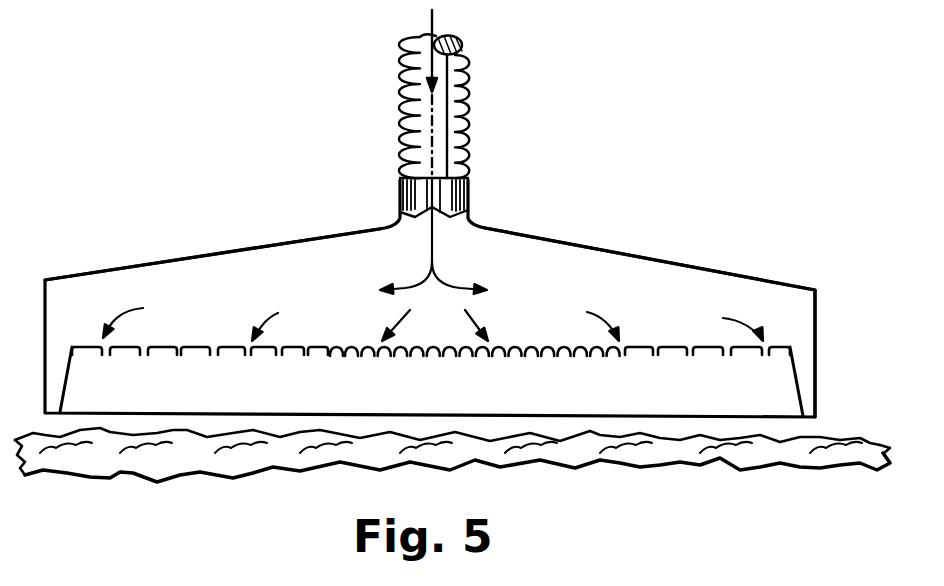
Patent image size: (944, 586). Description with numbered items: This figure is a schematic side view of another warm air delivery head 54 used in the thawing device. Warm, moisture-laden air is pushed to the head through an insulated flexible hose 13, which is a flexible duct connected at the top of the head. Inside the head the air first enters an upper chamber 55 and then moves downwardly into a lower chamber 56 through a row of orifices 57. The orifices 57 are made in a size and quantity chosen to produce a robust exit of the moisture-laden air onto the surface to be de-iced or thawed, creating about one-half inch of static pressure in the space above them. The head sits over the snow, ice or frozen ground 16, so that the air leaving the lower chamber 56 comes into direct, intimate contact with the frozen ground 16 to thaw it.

The insulated flexible hose 13 is at (469, 100).
The frozen ground 16 is at (755, 462).
The warm air delivery head 54 is at (668, 220).
The upper chamber 55 is at (684, 293).
The chamber 56 is at (752, 389).
The orifices 57 is at (618, 360).